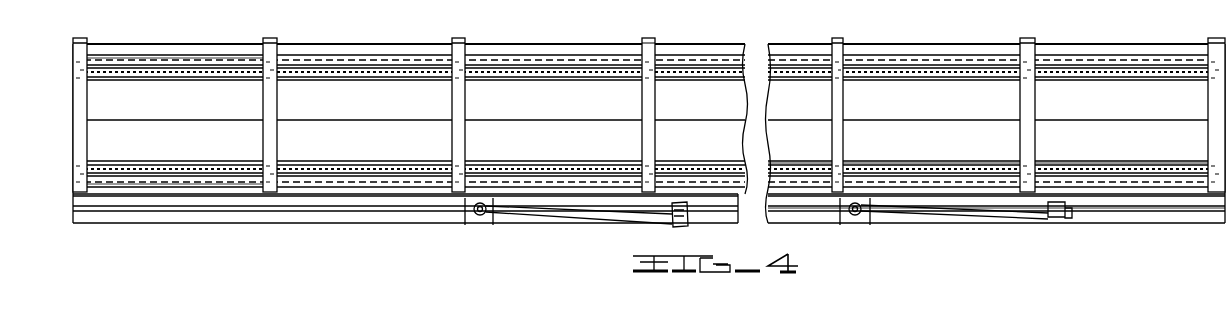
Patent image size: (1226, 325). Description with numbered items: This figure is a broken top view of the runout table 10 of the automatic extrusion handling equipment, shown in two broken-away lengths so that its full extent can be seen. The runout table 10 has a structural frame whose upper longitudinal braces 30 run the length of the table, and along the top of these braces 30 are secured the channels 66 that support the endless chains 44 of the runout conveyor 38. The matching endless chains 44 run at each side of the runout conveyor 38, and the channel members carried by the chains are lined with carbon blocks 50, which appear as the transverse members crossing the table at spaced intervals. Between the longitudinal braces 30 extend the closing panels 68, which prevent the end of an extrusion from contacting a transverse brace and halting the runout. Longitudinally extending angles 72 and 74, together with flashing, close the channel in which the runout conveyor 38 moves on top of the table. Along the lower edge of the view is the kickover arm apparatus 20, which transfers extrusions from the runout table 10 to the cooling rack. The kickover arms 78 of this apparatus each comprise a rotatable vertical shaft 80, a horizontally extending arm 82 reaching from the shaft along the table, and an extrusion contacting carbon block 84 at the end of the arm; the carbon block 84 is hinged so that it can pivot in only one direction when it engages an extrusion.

The runout table 10 is at (274, 227).
The kickover arm apparatus 20 is at (536, 224).
The upper longitudinal brace 30 is at (319, 58).
The runout conveyor 38 is at (640, 137).
The endless chains 44 is at (494, 168).
The carbon blocks 50 is at (276, 112).
The channels 66 is at (903, 167).
The closing panels 68 is at (649, 107).
The longitudinally extending angle 72 is at (546, 47).
The longitudinally extending angle 74 is at (1173, 195).
The kickover arms 78 is at (966, 221).
The rotatable vertical shaft 80 is at (855, 215).
The horizontally extending arm 82 is at (998, 221).
The extrusion contacting carbon block 84 is at (689, 210).